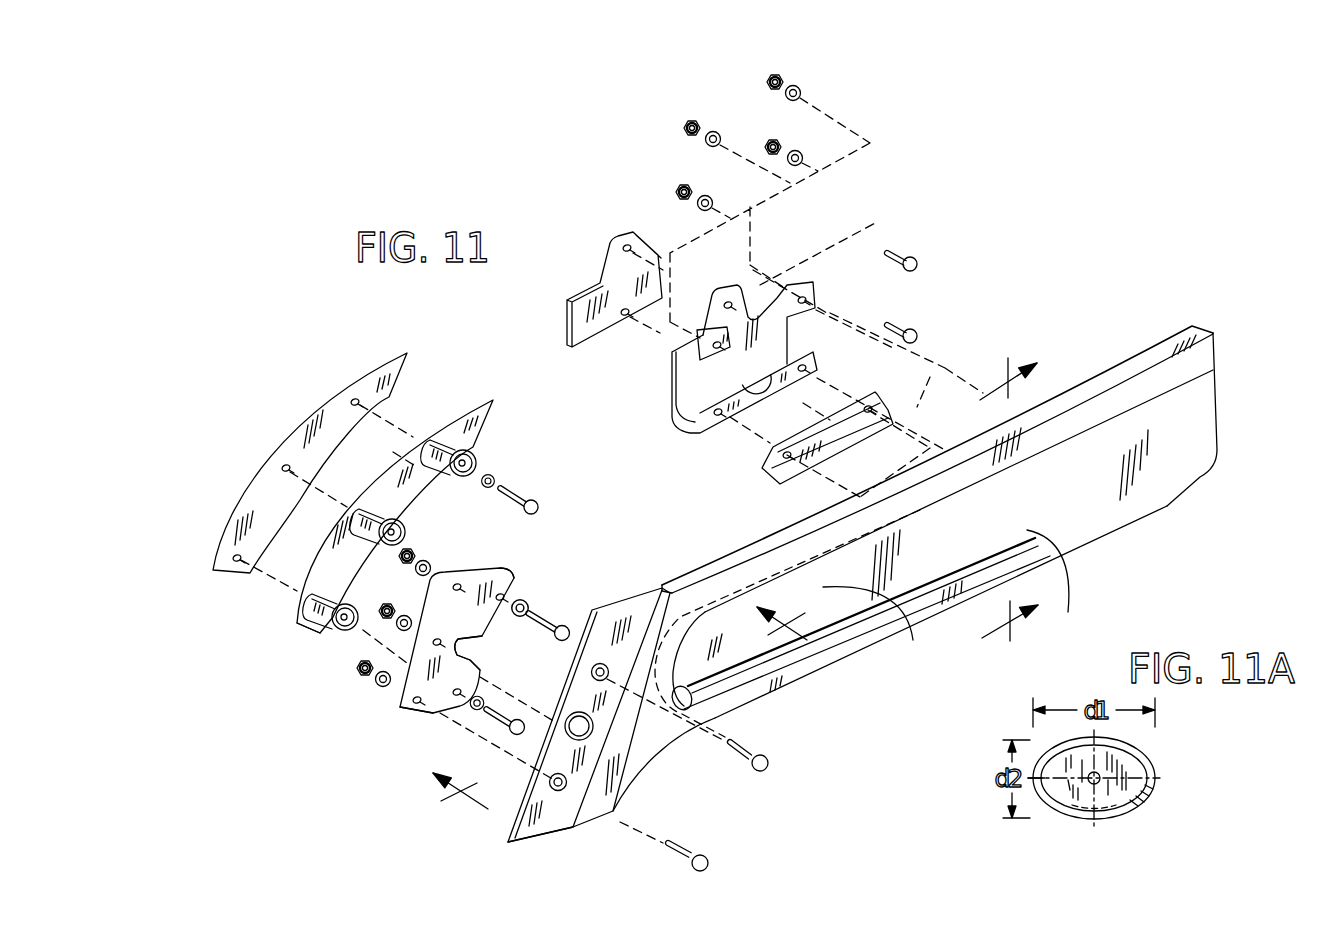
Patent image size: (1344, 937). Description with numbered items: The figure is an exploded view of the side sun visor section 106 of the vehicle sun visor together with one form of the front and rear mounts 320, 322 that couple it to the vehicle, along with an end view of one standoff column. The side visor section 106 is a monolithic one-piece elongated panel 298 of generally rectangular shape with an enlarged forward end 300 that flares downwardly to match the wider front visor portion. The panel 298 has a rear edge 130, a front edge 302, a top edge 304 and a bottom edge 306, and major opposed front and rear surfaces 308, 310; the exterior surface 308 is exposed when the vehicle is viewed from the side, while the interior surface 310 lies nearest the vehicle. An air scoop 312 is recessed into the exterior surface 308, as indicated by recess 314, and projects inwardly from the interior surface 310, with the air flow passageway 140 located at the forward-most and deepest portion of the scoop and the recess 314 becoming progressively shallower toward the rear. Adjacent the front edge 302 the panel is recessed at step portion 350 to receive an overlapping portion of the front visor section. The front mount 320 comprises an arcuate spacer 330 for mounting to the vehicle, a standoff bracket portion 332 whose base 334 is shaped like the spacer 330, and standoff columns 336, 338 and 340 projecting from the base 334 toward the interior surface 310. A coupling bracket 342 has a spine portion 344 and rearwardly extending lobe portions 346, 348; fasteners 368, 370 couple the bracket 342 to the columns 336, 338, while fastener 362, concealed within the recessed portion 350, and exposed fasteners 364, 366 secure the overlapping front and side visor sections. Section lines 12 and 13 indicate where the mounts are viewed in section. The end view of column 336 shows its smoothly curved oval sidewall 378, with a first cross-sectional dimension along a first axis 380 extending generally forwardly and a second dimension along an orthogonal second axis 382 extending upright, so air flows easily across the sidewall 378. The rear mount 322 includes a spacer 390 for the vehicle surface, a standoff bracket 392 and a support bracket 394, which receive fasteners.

In FIG. 11, the side sun visor section 106 is at (1072, 512).
In FIG. 11, the rear edge 130 is at (1218, 438).
In FIG. 11, the air flow passageway 140 is at (700, 700).
In FIG. 11, the elongated panel 298 is at (1178, 418).
In FIG. 11, the enlarged forward end 300 is at (640, 778).
In FIG. 11, the front edge 302 is at (508, 840).
In FIG. 11, the top edge 304 is at (1108, 372).
In FIG. 11, the bottom edge 306 is at (1078, 548).
In FIG. 11, the front surface 308 is at (941, 612).
In FIG. 11, the rear surface 310 is at (702, 567).
In FIG. 11, the air scoop 312 is at (742, 648).
In FIG. 11, the recess 314 is at (863, 615).
In FIG. 11, the front mount 320 is at (232, 471).
In FIG. 11, the rear mount 322 is at (653, 212).
In FIG. 11, the arcuate spacer 330 is at (231, 548).
In FIG. 11, the standoff bracket portion 332 is at (303, 591).
In FIG. 11, the base 334 is at (305, 626).
In FIG. 11, the standoff column 336 is at (330, 615).
In FIG. 11A, the standoff column 336 is at (1160, 749).
In FIG. 11, the standoff column 338 is at (378, 513).
In FIG. 11, the standoff column 340 is at (447, 440).
In FIG. 11, the coupling bracket 342 is at (412, 722).
In FIG. 11, the spine portion 344 is at (402, 712).
In FIG. 11, the lobe portion 346 is at (478, 678).
In FIG. 11, the lobe portion 348 is at (520, 580).
In FIG. 11, the recessed portion 350 is at (549, 823).
In FIG. 11, the fastener 362 is at (592, 728).
In FIG. 11, the fastener 364 is at (713, 868).
In FIG. 11, the fastener 366 is at (768, 775).
In FIG. 11, the fastener 368 is at (568, 625).
In FIG. 11, the fastener 370 is at (512, 735).
In FIG. 11A, the sidewall 378 is at (1160, 790).
In FIG. 11A, the first axis 380 is at (1068, 812).
In FIG. 11A, the second axis 382 is at (1113, 815).
In FIG. 11, the spacer 390 is at (581, 331).
In FIG. 11, the standoff bracket 392 is at (690, 412).
In FIG. 11, the support bracket 394 is at (878, 402).
In FIG. 11, the section view indicator 12 is at (636, 717).
In FIG. 11, the section view indicator 13 is at (1004, 512).